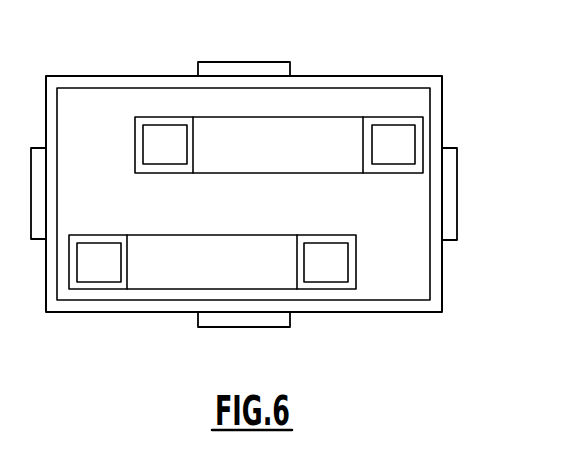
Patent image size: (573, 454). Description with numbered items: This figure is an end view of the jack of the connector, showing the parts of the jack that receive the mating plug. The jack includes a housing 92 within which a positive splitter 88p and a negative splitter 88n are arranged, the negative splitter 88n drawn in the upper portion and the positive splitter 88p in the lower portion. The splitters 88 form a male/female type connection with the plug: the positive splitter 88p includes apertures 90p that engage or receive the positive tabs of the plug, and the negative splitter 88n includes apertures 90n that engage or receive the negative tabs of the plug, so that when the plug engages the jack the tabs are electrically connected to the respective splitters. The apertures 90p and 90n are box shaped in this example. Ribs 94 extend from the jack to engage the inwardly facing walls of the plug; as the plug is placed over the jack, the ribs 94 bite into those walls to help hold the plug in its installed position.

The housing 88 is at (442, 112).
The housing 92 is at (442, 278).
The ribs 94 is at (457, 195).
The negative splitter 88n is at (292, 173).
The apertures 90n is at (380, 125).
The positive splitter 88p is at (155, 235).
The apertures 90p is at (322, 272).